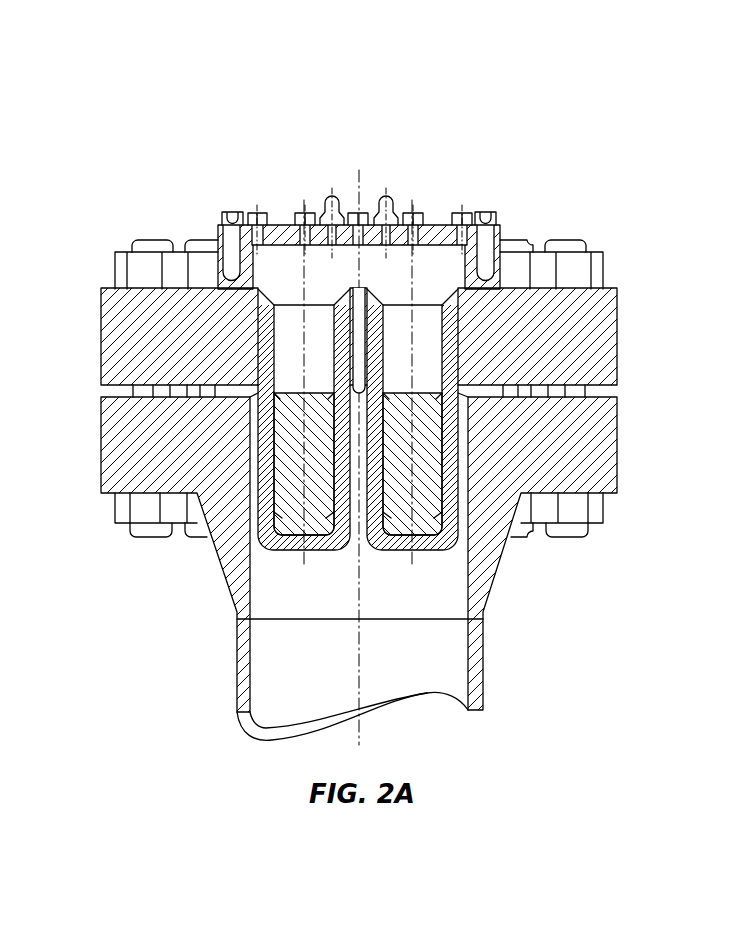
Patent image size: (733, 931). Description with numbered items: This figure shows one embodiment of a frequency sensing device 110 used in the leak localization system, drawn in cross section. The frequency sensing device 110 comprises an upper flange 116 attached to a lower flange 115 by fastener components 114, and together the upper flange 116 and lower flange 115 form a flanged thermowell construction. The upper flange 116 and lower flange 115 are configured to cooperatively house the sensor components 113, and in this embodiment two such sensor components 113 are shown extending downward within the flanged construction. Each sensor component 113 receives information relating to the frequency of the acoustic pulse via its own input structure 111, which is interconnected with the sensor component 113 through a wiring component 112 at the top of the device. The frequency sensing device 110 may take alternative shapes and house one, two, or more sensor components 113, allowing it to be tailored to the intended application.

The frequency sensing device 110 is at (614, 176).
The input structure 111 is at (385, 226).
The wiring component 112 is at (304, 240).
The sensor component 113 is at (290, 523).
The fastener component 114 is at (571, 508).
The lower flange 115 is at (600, 462).
The upper flange 116 is at (595, 318).